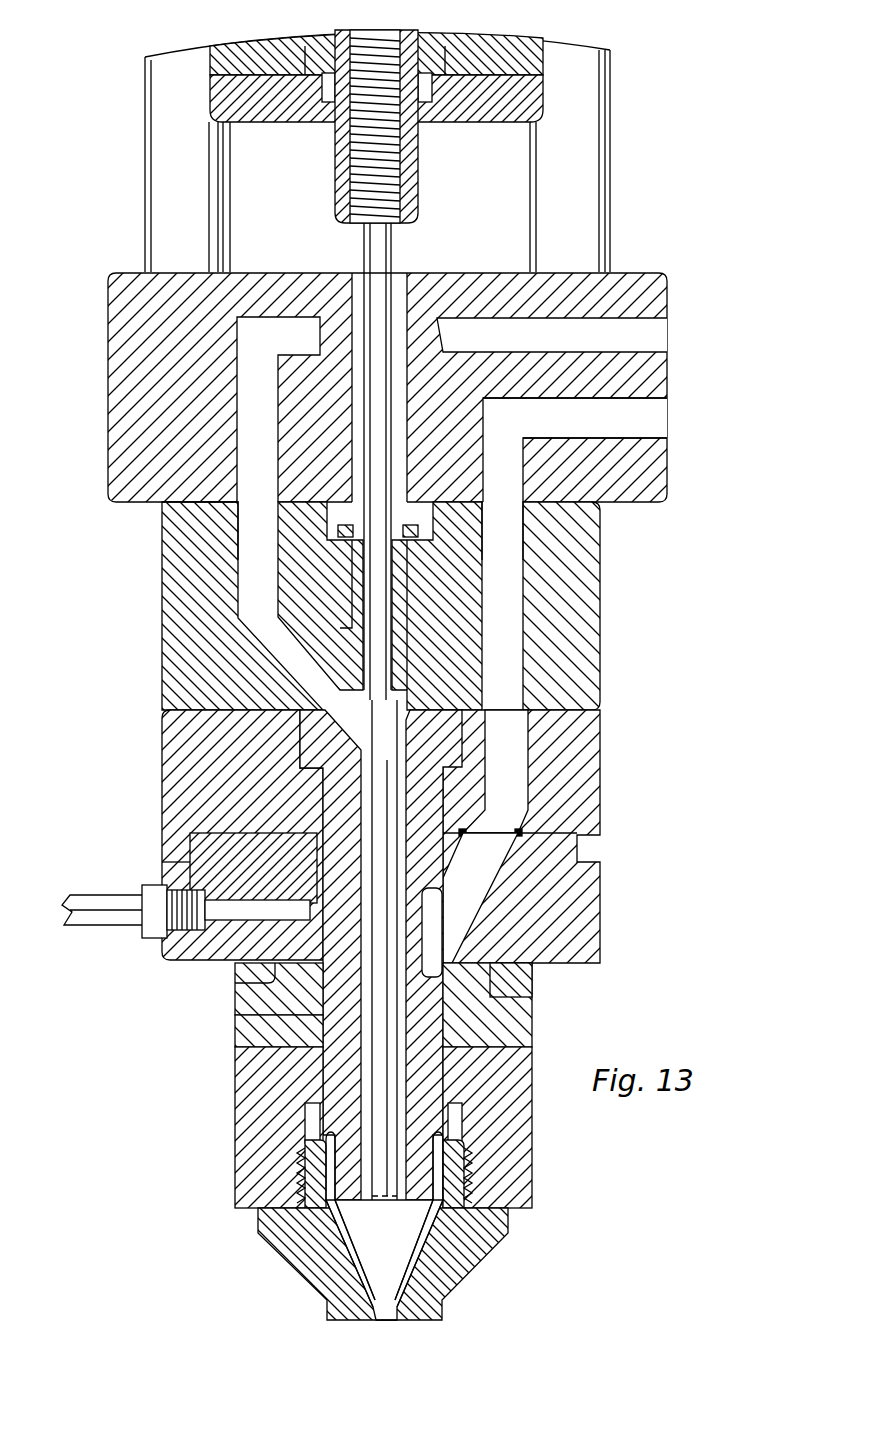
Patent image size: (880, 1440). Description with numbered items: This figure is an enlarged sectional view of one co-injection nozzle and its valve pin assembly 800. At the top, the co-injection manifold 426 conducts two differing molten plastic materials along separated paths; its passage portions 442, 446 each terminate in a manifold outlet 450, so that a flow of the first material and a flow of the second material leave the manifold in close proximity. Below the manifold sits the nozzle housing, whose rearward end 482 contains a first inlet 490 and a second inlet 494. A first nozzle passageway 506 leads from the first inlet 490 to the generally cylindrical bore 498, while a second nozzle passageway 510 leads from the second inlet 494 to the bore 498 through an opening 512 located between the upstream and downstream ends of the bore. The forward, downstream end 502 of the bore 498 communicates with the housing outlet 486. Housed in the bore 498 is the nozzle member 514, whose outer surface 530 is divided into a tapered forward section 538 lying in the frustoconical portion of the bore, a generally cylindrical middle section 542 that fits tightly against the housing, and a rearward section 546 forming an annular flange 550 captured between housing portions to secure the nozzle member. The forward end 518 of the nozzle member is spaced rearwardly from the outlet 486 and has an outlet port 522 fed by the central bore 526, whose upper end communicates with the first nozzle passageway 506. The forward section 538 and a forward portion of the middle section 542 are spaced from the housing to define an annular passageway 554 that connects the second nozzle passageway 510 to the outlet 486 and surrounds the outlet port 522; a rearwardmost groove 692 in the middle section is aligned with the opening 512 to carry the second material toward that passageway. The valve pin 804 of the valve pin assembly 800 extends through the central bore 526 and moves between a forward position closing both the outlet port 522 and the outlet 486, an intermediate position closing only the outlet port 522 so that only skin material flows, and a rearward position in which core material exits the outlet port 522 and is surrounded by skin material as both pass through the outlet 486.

The valve pin assembly 800 is at (556, 93).
The valve pin 804 is at (364, 240).
The co-injection manifold 426 is at (118, 337).
The passage portion 442 is at (618, 335).
The passage portion 446 is at (642, 416).
The manifold outlet 450 is at (252, 485).
The rearward end 482 is at (90, 515).
The first inlet 490 is at (255, 512).
The second inlet 494 is at (510, 518).
The first nozzle passageway 506 is at (258, 575).
The second nozzle passageway 510 is at (510, 572).
The rearward section 546 is at (285, 740).
The annular flange 550 is at (458, 742).
The outer surface 530 is at (305, 865).
The opening 512 is at (460, 912).
The rearwardmost groove 692 is at (435, 950).
The middle section 542 is at (314, 977).
The nozzle member 514 is at (342, 1018).
The bore 498 is at (432, 1000).
The central bore 526 is at (378, 1060).
The annular passageway 554 is at (335, 1160).
The forward section 538 is at (334, 1230).
The forward end 518 is at (340, 1268).
The downstream end 502 is at (425, 1235).
The outlet port 522 is at (415, 1262).
The outlet 486 is at (385, 1322).